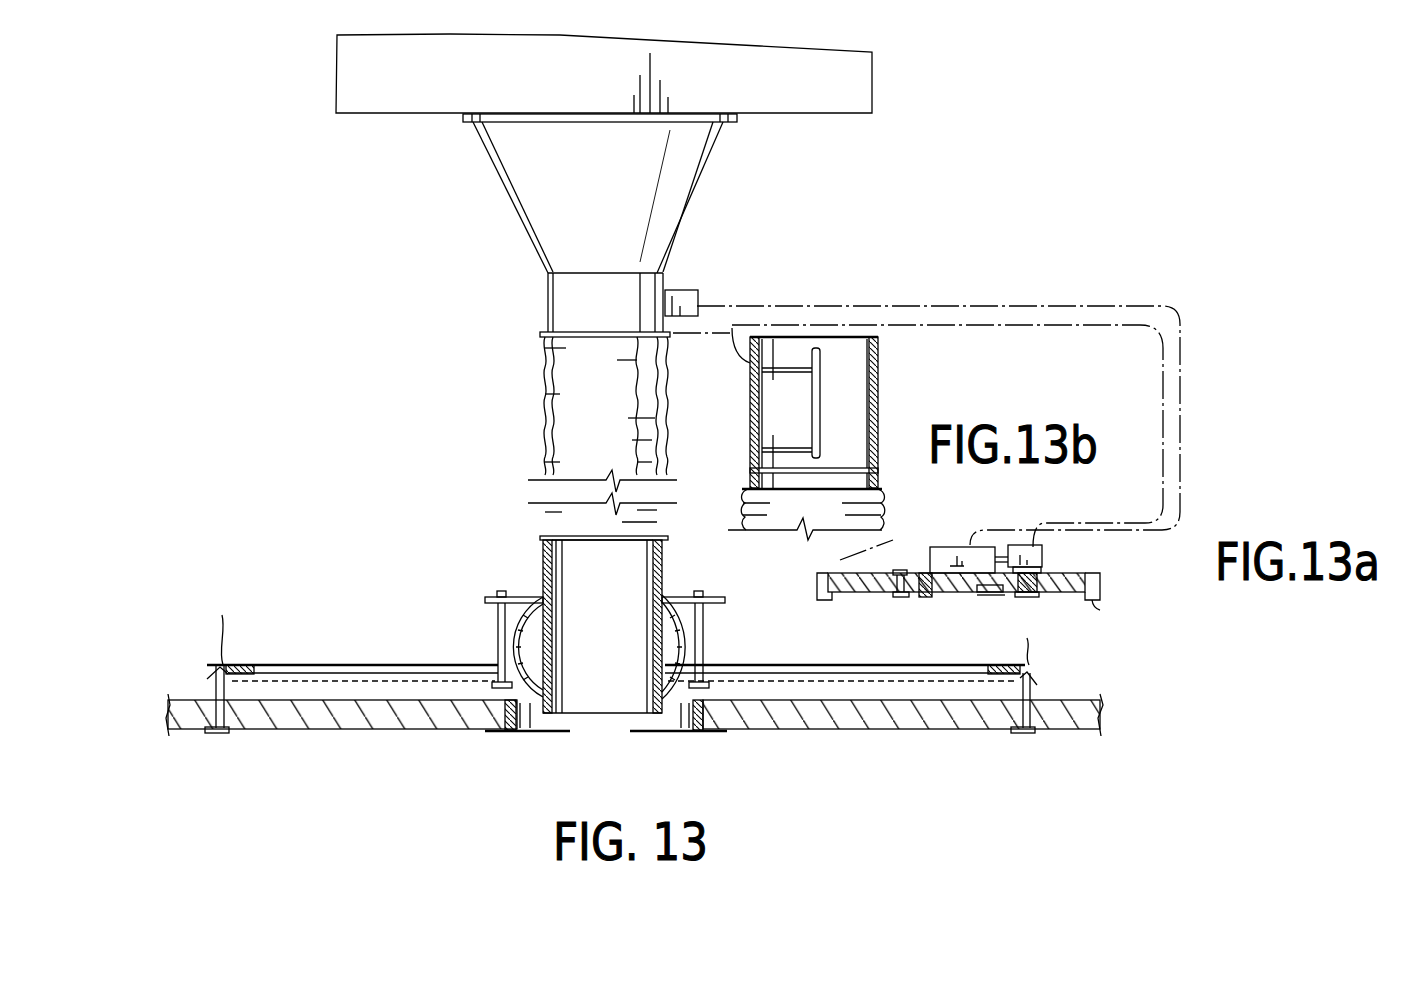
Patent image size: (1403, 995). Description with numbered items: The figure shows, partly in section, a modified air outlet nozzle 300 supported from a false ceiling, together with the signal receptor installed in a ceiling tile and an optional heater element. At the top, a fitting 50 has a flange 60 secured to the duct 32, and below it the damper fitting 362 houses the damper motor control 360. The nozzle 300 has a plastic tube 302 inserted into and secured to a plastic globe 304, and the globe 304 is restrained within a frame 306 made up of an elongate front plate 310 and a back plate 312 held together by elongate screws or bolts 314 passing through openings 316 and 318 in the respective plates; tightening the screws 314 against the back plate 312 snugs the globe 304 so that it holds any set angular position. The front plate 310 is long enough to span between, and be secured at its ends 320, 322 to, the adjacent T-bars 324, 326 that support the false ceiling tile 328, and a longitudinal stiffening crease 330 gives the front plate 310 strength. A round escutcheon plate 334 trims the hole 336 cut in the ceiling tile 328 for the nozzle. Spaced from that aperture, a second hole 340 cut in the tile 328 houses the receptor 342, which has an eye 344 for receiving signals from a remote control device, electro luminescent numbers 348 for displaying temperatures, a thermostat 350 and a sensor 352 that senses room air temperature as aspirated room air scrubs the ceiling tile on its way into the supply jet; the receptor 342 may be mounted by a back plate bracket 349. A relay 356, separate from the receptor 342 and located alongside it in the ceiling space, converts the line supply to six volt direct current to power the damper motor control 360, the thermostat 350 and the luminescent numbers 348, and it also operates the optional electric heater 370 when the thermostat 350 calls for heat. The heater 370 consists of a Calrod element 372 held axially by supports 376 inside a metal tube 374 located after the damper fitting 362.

In FIG. 13, the duct 32 is at (422, 89).
In FIG. 13, the fitting 50 is at (645, 210).
In FIG. 13, the flange 60 is at (737, 122).
In FIG. 13, the fitting 362 is at (560, 300).
In FIG. 13, the damper motor control 360 is at (690, 298).
In FIG. 13, the air outlet nozzle 300 is at (597, 692).
In FIG. 13, the plastic tube 302 is at (645, 703).
In FIG. 13, the plastic globe 304 is at (687, 652).
In FIG. 13, the frame 306 is at (480, 649).
In FIG. 13, the back plate 312 is at (520, 600).
In FIG. 13, the elongate screws or bolts 314 is at (500, 625).
In FIG. 13, the opening 318 is at (672, 592).
In FIG. 13, the longitudinal stiffening crease 330 is at (332, 663).
In FIG. 13, the front plate 310 is at (288, 663).
In FIG. 13, the end 320 is at (218, 668).
In FIG. 13, the T-bar 324 is at (207, 689).
In FIG. 13, the end 322 is at (1035, 675).
In FIG. 13, the T-bar 326 is at (1095, 692).
In FIG. 13, the false ceiling tile 328 is at (908, 718).
In FIG. 13A, the false ceiling tile 328 is at (1085, 603).
In FIG. 13, the opening 316 is at (515, 690).
In FIG. 13, the hole 336 is at (687, 717).
In FIG. 13, the round escutcheon plate 334 is at (704, 733).
In FIG. 13B, the electric heater 370 is at (833, 407).
In FIG. 13B, the Calrod element 372 is at (818, 387).
In FIG. 13B, the metal tube 374 is at (750, 403).
In FIG. 13B, the supports 376 is at (778, 372).
In FIG. 13A, the back plate bracket 349 is at (905, 573).
In FIG. 13A, the thermostat 350 is at (975, 553).
In FIG. 13A, the relay 356 is at (1042, 550).
In FIG. 13A, the second hole 340 is at (900, 598).
In FIG. 13A, the eye 344 is at (930, 600).
In FIG. 13A, the receptor 342 is at (975, 590).
In FIG. 13A, the electric luminescent numbers 348 is at (1010, 595).
In FIG. 13A, the sensor 352 is at (830, 596).